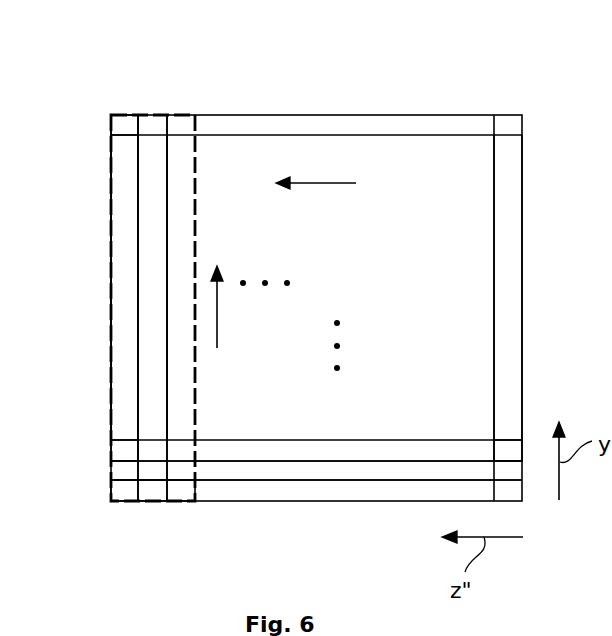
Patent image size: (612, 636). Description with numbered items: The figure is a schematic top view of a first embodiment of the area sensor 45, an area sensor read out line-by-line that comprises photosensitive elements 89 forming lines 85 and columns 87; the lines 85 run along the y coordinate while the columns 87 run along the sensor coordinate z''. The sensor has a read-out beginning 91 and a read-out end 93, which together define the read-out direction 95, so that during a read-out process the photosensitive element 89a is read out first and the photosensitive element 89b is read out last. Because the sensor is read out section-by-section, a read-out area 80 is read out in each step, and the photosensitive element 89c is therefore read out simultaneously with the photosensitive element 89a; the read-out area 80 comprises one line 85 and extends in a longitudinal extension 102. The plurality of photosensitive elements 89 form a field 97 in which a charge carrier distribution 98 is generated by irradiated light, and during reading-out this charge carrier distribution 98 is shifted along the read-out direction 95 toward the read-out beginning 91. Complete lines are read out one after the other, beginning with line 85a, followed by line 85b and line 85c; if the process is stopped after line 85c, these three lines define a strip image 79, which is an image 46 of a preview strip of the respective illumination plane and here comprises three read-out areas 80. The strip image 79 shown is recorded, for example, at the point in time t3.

The area sensor 45 is at (156, 51).
The point in time t3 is at (397, 43).
The line 85 is at (149, 121).
The line 85a is at (122, 211).
The line 85b is at (150, 180).
The line 85c is at (177, 225).
The photosensitive element 89c is at (120, 123).
The strip image 79 is at (110, 173).
The read-out beginning 91 is at (103, 267).
The read-out area 80 is at (120, 325).
The read-out direction 95 is at (316, 183).
The longitudinal extension 102 is at (217, 333).
The field 97 is at (301, 382).
The read-out end 93 is at (537, 240).
The charge carrier distribution 98 is at (478, 292).
The image 46 is at (155, 364).
The photosensitive element 89a is at (121, 447).
The column 87 is at (184, 473).
The photosensitive element 89 is at (122, 490).
The photosensitive element 89b is at (510, 451).